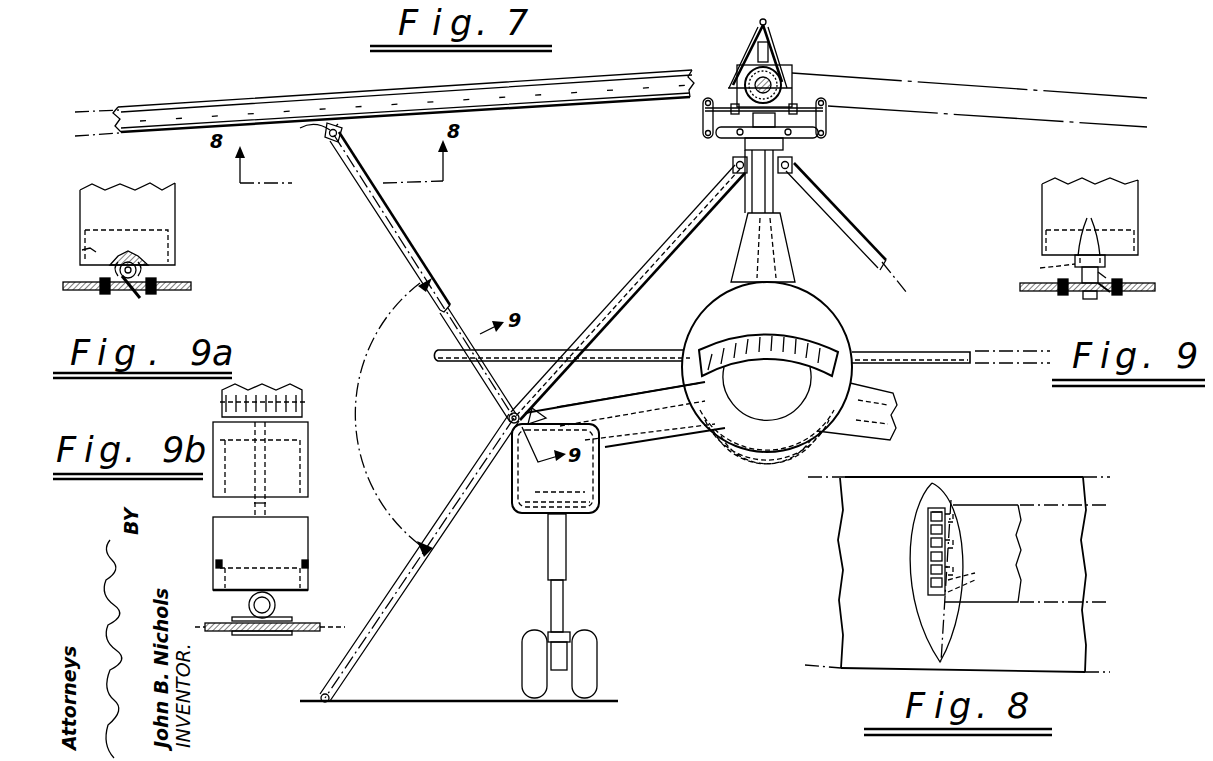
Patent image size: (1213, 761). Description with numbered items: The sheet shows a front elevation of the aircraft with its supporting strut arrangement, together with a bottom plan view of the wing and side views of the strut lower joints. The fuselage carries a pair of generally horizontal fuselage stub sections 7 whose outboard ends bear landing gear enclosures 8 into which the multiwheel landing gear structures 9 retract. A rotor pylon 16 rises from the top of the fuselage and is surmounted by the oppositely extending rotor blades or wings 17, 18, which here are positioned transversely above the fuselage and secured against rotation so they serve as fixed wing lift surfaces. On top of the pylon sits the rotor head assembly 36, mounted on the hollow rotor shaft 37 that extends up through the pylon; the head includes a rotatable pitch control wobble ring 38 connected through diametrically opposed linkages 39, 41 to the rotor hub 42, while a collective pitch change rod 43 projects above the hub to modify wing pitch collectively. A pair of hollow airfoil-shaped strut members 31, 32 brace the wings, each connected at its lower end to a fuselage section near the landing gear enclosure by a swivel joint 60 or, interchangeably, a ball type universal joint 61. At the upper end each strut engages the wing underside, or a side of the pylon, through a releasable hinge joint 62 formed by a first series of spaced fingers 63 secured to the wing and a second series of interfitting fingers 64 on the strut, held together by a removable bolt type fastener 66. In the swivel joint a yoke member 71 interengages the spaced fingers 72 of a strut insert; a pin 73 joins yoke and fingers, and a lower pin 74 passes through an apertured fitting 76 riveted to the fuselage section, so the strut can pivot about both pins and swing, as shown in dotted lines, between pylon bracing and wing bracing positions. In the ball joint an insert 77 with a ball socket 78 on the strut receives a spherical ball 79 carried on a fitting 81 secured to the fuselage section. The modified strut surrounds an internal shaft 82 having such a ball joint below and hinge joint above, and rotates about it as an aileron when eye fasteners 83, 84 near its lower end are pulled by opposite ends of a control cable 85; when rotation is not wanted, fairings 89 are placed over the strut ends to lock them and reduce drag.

In FIG. 7, the fuselage stub section 7 is at (645, 432).
In FIG. 9A, the fuselage stub section 7 is at (192, 288).
In FIG. 9, the fuselage stub section 7 is at (1150, 290).
In FIG. 9B, the fuselage stub section 7 is at (210, 632).
In FIG. 7, the landing gear enclosure 8 is at (512, 497).
In FIG. 7, the landing gear structure 9 is at (565, 612).
In FIG. 7, the rotor pylon 16 is at (780, 266).
In FIG. 7, the rotor blade or wing 17 is at (600, 90).
In FIG. 7, the rotor blade or wing 18 is at (940, 98).
In FIG. 7, the strut member 31 is at (408, 252).
In FIG. 9A, the strut member 31 is at (168, 232).
In FIG. 9, the strut member 31 is at (1130, 220).
In FIG. 9B, the strut member 31 is at (300, 478).
In FIG. 7, the strut member 32 is at (875, 258).
In FIG. 7, the rotor head assembly 36 is at (784, 74).
In FIG. 7, the rotor shaft 37 is at (816, 137).
In FIG. 7, the pitch control wobble ring 38 is at (748, 146).
In FIG. 7, the linkage 39 is at (704, 118).
In FIG. 7, the linkage 41 is at (826, 120).
In FIG. 7, the rotor hub 42 is at (795, 86).
In FIG. 7, the collective pitch change rod 43 is at (770, 62).
In FIG. 7, the swivel joint 60 is at (508, 420).
In FIG. 9, the swivel joint 60 is at (1110, 278).
In FIG. 9A, the ball type universal joint 61 is at (170, 268).
In FIG. 9B, the ball type universal joint 61 is at (278, 606).
In FIG. 7, the releasable hinge joint 62 is at (734, 168).
In FIG. 9B, the releasable hinge joint 62 is at (292, 388).
In FIG. 8, the releasable hinge joint 62 is at (946, 536).
In FIG. 7, the first series of spaced fingers 63 is at (344, 131).
In FIG. 8, the first series of spaced fingers 63 is at (930, 523).
In FIG. 8, the second series of spaced interfitting fingers 64 is at (974, 578).
In FIG. 7, the bolt type fastener 66 is at (336, 124).
In FIG. 8, the bolt type fastener 66 is at (943, 598).
In FIG. 9, the yoke member 71 is at (1106, 263).
In FIG. 9, the spaced fingers 72 is at (1088, 228).
In FIG. 9, the pin 73 is at (1043, 268).
In FIG. 9, the pin 74 is at (1090, 300).
In FIG. 9, the apertured fitting 76 is at (1108, 298).
In FIG. 9A, the insert 77 is at (84, 246).
In FIG. 9A, the ball socket 78 is at (118, 272).
In FIG. 9A, the spherical ball 79 is at (140, 272).
In FIG. 9A, the fitting 81 is at (126, 294).
In FIG. 9B, the internal shaft 82 is at (254, 505).
In FIG. 7, the eye fastener 83 is at (542, 410).
In FIG. 9B, the eye fastener 83 is at (216, 564).
In FIG. 9B, the eye fastener 84 is at (306, 564).
In FIG. 7, the control cable 85 is at (645, 404).
In FIG. 8, the fairing 89 is at (944, 630).